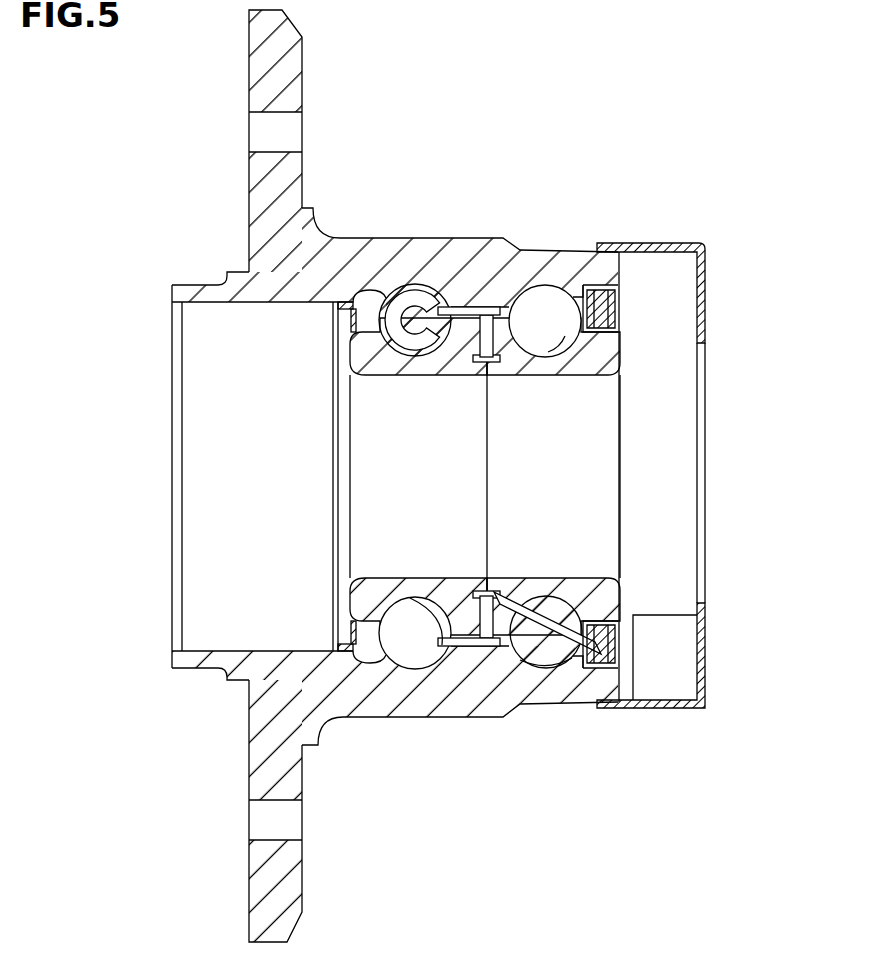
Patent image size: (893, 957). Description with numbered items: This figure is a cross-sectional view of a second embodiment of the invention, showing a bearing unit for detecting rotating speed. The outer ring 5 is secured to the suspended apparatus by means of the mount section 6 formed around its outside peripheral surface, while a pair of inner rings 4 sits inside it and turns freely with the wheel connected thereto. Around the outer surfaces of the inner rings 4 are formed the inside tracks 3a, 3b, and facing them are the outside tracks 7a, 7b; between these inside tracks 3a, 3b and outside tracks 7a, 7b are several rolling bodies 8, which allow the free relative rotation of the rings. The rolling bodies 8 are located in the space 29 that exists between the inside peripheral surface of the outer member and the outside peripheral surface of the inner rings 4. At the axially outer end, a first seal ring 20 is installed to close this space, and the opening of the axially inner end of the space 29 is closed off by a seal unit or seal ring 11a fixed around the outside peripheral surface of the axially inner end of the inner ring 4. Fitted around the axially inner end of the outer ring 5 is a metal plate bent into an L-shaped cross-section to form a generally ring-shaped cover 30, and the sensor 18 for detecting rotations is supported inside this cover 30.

The inside track 3a is at (396, 649).
The inside track 3b is at (550, 340).
The inner rings 4 is at (554, 485).
The outer ring 5 is at (420, 250).
The mount section 6 is at (293, 54).
The outside track 7a is at (440, 636).
The outside track 7b is at (540, 662).
The rolling bodies 8 is at (423, 290).
The seal ring 11a is at (633, 637).
The sensor 18 is at (680, 690).
The first seal ring 20 is at (340, 650).
The space 29 is at (483, 640).
The cover 30 is at (705, 398).